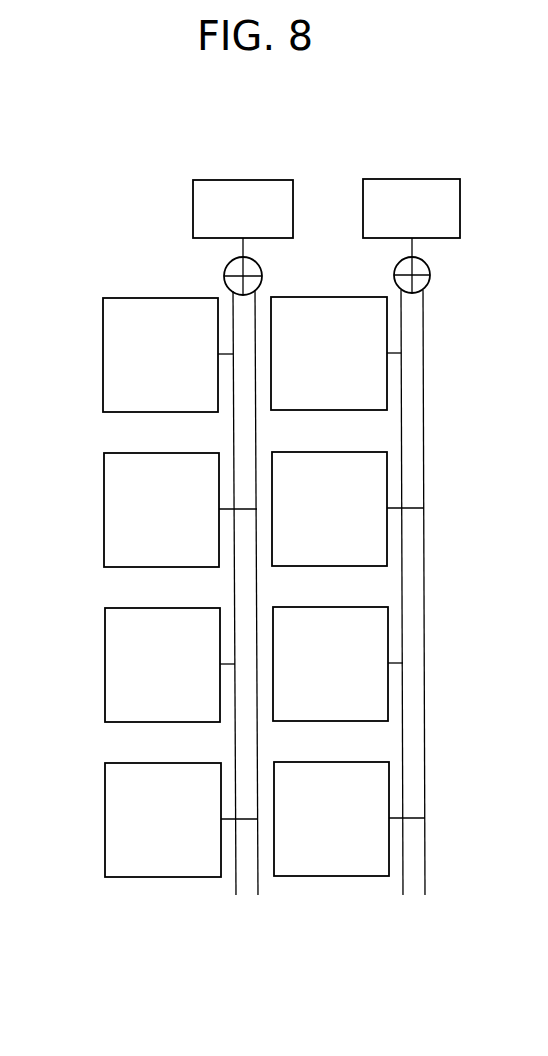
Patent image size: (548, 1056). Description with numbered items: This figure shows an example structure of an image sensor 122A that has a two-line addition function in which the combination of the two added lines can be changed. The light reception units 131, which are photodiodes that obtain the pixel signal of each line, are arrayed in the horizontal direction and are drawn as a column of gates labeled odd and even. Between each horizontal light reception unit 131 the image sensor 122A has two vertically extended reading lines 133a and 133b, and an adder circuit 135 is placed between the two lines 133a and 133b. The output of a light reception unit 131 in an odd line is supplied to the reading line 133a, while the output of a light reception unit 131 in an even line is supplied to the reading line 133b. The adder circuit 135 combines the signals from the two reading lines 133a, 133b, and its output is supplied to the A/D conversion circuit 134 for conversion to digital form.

The image sensor 122A is at (123, 168).
The A/D conversion circuit 134 is at (193, 209).
The adder circuit 135 is at (259, 264).
The reading line 133a is at (233, 294).
The reading line 133b is at (258, 294).
The light reception unit 131 is at (103, 356).